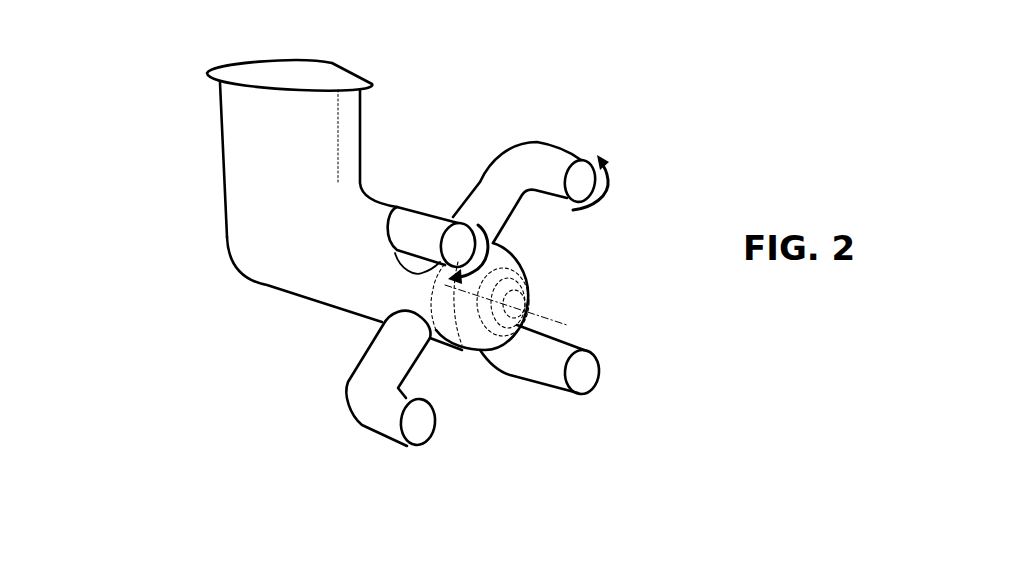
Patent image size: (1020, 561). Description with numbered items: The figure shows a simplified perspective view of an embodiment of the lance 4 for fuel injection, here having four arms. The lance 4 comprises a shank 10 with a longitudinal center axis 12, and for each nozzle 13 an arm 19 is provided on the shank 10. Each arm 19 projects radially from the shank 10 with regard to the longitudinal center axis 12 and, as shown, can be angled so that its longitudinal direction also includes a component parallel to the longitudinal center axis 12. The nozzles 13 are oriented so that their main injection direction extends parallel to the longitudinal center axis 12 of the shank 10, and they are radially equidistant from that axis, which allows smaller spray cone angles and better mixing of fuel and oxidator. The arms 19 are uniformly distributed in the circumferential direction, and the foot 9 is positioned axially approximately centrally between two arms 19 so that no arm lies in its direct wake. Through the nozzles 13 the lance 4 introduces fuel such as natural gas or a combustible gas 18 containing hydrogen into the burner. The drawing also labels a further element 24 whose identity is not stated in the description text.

The lance 4 is at (208, 291).
The foot 9 is at (252, 142).
The shank 10 is at (342, 284).
The longitudinal center axis 12 is at (485, 300).
The nozzle 13 is at (582, 175).
The combustible gas 18 is at (610, 177).
The arm 19 is at (552, 170).
The adjusting cylinder 24 is at (582, 187).